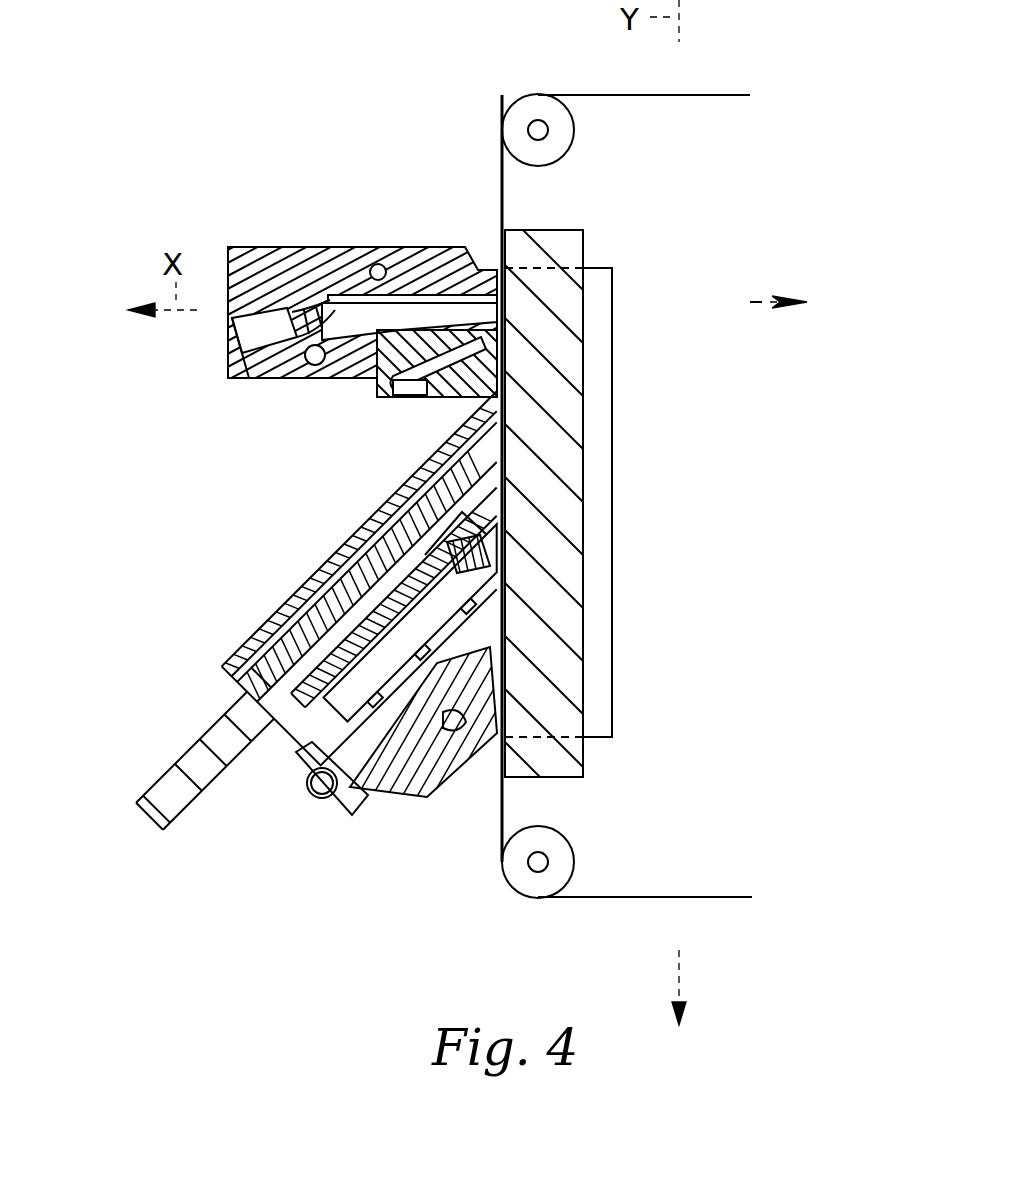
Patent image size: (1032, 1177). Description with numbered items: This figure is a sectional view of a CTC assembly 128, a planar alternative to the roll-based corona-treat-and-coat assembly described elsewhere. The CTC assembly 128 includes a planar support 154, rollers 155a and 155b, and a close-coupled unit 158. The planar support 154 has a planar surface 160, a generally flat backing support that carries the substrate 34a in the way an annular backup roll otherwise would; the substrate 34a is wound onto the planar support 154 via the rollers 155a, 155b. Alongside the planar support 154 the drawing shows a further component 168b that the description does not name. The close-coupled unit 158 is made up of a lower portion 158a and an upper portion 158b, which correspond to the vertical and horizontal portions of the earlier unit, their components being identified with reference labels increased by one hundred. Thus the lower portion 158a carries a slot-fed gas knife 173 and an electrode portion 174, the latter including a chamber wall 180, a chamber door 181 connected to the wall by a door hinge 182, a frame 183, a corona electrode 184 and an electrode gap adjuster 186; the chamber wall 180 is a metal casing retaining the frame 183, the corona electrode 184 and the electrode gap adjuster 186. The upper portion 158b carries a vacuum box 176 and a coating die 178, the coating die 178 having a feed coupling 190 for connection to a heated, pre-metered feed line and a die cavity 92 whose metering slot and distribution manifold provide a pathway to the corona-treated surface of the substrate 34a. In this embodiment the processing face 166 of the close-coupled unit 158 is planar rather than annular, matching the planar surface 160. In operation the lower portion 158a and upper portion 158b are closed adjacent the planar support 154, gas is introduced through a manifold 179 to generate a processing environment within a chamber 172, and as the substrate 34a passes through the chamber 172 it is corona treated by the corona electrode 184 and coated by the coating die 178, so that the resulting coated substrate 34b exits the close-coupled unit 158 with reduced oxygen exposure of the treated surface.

The CTC assembly 128 is at (380, 88).
The close-coupled unit 158 is at (160, 492).
The lower portion 158a is at (240, 825).
The upper portion 158b is at (218, 195).
The coating die 178 is at (329, 335).
The die cavity 92 is at (420, 296).
The feed coupling 190 is at (262, 343).
The vacuum box 176 is at (390, 394).
The electrode gap adjuster 186 is at (420, 396).
The chamber 172 is at (462, 481).
The chamber wall 180 is at (318, 572).
The electrode portion 174 is at (432, 643).
The chamber door 181 is at (390, 782).
The door hinge 182 is at (342, 815).
The frame 183 is at (300, 740).
The slot-fed gas knife 173 is at (425, 790).
The corona electrode 184 is at (484, 546).
The planar surface 160 is at (468, 690).
The manifold 179 is at (470, 740).
The planar support 154 is at (603, 432).
The processing face 166 is at (512, 378).
The support plate 168b is at (615, 490).
The roller 155a is at (574, 845).
The roller 155b is at (568, 157).
The substrate 34a is at (614, 897).
The coated substrate 34b is at (716, 95).